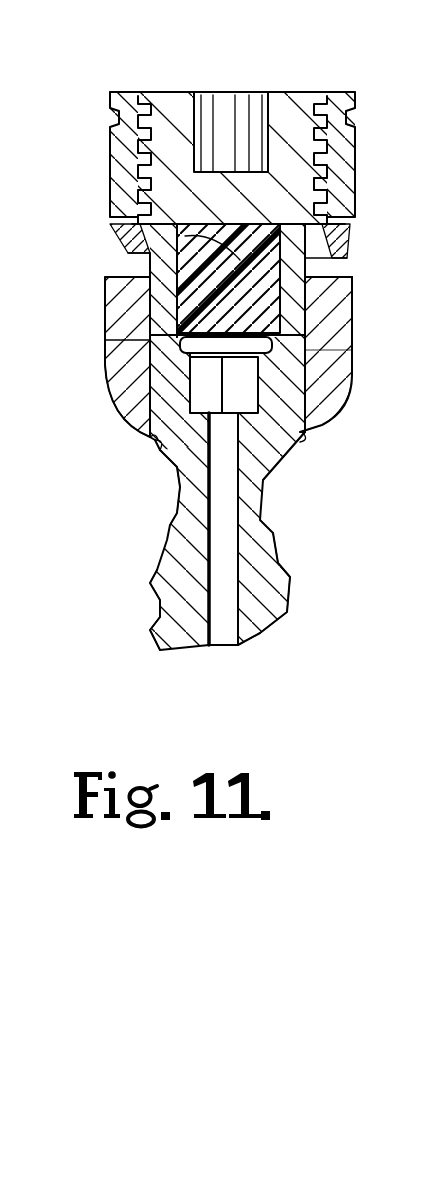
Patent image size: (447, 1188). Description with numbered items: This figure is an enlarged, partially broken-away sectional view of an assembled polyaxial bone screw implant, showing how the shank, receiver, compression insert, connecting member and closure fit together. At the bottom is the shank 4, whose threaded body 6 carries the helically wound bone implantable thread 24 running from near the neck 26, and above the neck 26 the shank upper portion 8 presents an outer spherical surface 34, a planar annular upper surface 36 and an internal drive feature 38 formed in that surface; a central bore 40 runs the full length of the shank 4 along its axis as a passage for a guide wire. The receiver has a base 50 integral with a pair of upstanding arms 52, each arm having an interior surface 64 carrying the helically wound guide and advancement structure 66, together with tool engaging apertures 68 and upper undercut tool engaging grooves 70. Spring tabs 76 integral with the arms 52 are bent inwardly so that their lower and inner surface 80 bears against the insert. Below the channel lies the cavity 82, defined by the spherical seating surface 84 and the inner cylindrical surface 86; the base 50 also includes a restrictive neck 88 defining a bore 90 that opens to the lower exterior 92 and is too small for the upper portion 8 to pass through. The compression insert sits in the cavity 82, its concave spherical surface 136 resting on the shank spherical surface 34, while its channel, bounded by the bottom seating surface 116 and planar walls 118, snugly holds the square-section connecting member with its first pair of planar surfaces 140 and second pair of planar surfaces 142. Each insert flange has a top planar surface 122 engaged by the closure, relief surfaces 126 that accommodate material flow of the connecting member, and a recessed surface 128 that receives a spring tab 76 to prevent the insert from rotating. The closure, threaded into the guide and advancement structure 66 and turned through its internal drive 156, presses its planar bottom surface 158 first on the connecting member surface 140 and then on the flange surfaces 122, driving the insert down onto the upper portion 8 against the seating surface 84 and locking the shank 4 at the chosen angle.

The shank 4 is at (167, 543).
The threaded body 6 is at (284, 560).
The upper portion 8 is at (276, 448).
The bone implantable thread 24 is at (148, 630).
The neck 26 is at (177, 497).
The outer spherical surface 34 is at (318, 411).
The planar annular upper surface 36 is at (105, 377).
The internal drive feature 38 is at (150, 344).
The central bore 40 is at (264, 523).
The base 50 is at (108, 400).
The upstanding arms 52 is at (110, 100).
The interior surface 64 is at (300, 106).
The guide and advancement structure 66 is at (155, 108).
The tool engaging apertures 68 is at (352, 280).
The tool engaging grooves 70 is at (118, 118).
The spring tabs 76 is at (118, 232).
The lower and inner surface 80 is at (226, 223).
The cavity 82 is at (318, 383).
The spherical seating surface 84 is at (148, 420).
The inner cylindrical surface 86 is at (322, 326).
The restrictive neck 88 is at (297, 445).
The bore 90 is at (157, 443).
The lower exterior 92 is at (310, 440).
The bottom seating surface 116 is at (346, 303).
The planar walls 118 is at (346, 262).
The top planar surface 122 is at (128, 206).
The relief surfaces 126 is at (140, 183).
The recessed surface 128 is at (120, 257).
The concave spherical surface 136 is at (343, 356).
The first pair of opposed planar surfaces 140 is at (252, 223).
The second pair of opposed planar surfaces 142 is at (150, 316).
The internal drive 156 is at (210, 118).
The bottom surface 158 is at (152, 292).